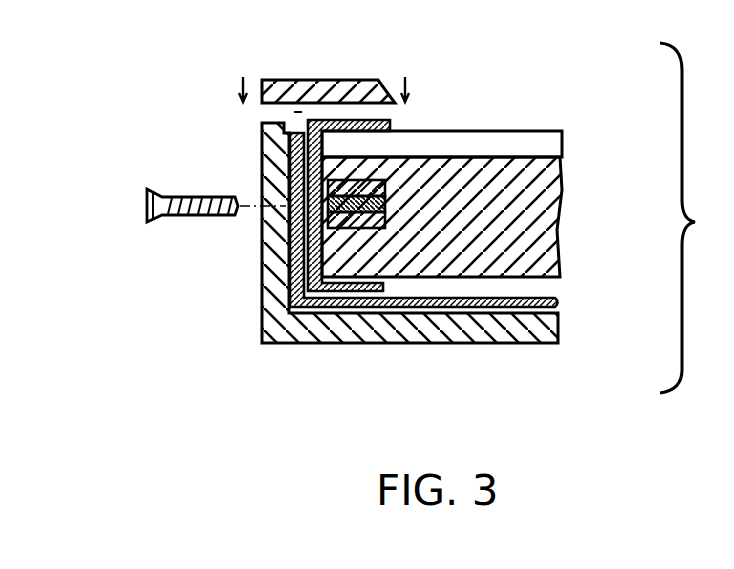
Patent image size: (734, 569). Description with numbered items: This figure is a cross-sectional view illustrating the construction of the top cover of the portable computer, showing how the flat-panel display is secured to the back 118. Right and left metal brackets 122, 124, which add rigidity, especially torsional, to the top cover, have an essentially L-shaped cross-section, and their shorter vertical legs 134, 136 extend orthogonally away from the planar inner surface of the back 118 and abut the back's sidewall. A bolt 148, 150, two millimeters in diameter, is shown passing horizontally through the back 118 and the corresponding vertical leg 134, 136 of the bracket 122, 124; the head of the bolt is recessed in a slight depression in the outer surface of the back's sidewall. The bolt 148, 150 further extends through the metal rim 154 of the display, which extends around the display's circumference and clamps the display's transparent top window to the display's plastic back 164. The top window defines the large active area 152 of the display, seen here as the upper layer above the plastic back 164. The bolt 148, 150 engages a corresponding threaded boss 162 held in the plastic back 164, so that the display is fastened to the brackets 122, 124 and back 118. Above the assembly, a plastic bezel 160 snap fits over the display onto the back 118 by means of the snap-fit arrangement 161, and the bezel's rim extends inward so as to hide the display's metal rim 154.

The back 118 is at (500, 343).
The right metal bracket 122 is at (371, 267).
The left metal bracket 124 is at (371, 267).
The shorter leg of bracket 134 is at (323, 232).
The shorter leg of bracket 136 is at (290, 277).
The bolt 148 is at (149, 228).
The bolt 150 is at (147, 219).
The active area 152 is at (520, 130).
The metal rim 154 is at (385, 127).
The plastic bezel 160 is at (342, 80).
The snap-fit arrangement 161 is at (298, 127).
The threaded boss 162 is at (376, 230).
The plastic back of the display 164 is at (565, 222).